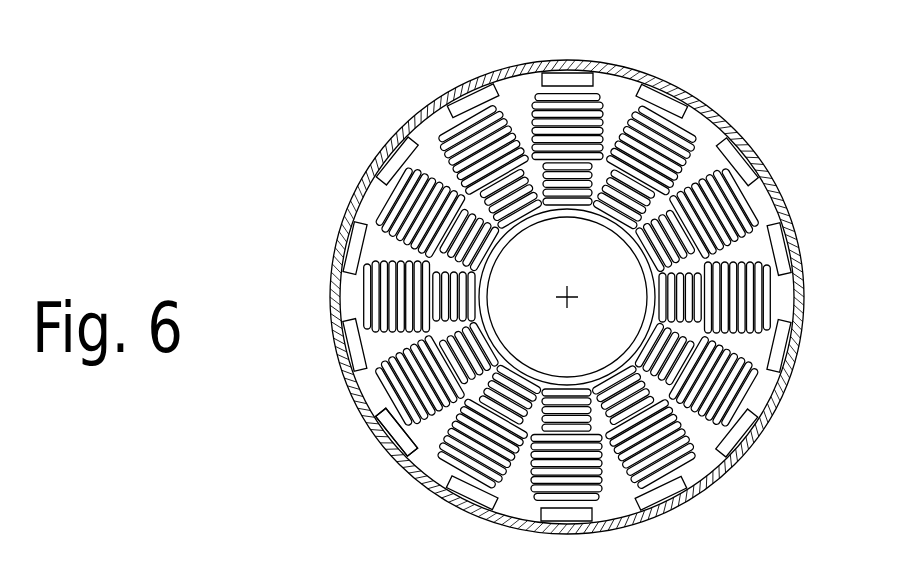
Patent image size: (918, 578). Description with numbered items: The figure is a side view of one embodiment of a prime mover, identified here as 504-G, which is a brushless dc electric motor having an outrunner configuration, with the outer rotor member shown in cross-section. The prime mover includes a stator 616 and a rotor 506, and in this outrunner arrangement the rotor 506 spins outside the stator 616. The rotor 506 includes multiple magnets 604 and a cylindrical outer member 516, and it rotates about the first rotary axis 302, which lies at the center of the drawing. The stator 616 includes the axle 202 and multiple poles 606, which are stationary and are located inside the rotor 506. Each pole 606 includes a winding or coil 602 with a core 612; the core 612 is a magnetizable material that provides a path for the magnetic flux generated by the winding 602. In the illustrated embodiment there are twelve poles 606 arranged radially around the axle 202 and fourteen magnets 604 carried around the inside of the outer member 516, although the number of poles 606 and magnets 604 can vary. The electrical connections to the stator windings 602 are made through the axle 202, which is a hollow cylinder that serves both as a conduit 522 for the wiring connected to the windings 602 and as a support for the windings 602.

The stator assembly 504-G is at (762, 2).
The rotor 506 is at (331, 276).
The outer member 516 is at (336, 356).
The winding 602 is at (365, 222).
The pole 606 is at (603, 92).
The magnet 604 is at (694, 127).
The core 612 is at (388, 189).
The stator 616 is at (356, 412).
The axle 202 is at (543, 366).
The conduit 522 is at (557, 284).
The first rotary axis 302 is at (576, 292).